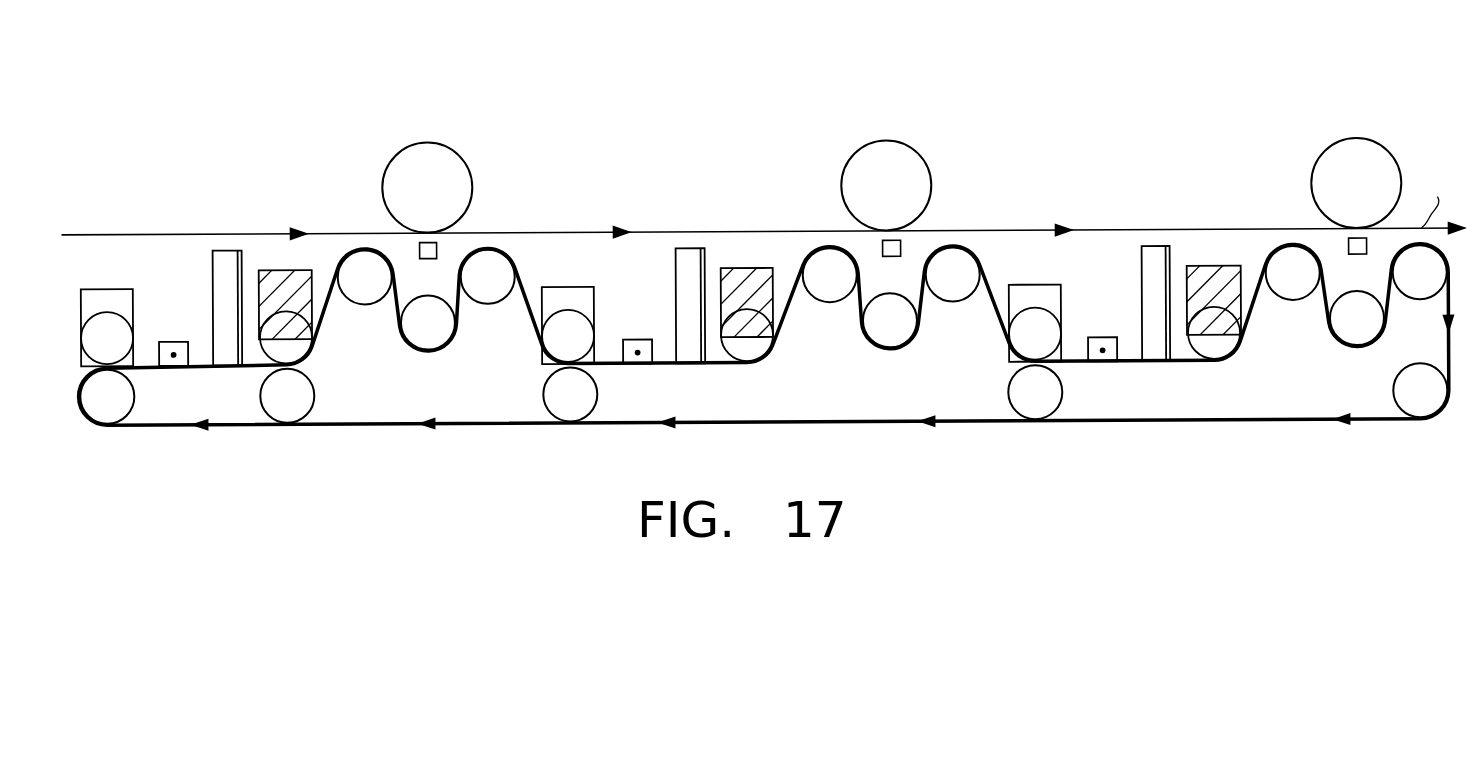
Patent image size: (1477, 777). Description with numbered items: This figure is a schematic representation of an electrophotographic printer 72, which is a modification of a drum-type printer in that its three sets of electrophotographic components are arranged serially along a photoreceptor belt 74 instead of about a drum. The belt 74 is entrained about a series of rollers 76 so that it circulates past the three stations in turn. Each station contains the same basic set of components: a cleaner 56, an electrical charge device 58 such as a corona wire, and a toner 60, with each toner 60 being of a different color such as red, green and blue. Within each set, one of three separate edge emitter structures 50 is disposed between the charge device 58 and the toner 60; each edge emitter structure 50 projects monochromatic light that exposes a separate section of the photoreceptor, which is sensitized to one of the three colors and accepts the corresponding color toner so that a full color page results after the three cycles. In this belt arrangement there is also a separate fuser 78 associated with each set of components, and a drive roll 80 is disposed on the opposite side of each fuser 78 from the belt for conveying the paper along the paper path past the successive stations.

The edge emitter structure 50 is at (213, 289).
The cleaner 56 is at (107, 285).
The electrical charge device 58 is at (175, 337).
The toner 60 is at (284, 266).
The electrophotographic printer 72 is at (1112, 132).
The photoreceptor belt 74 is at (781, 320).
The roller 76 is at (134, 392).
The fuser 78 is at (435, 257).
The drive roll 80 is at (391, 173).